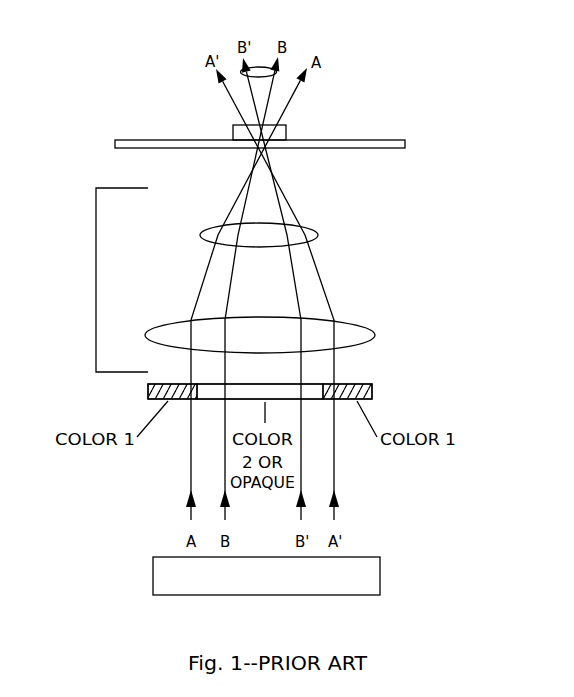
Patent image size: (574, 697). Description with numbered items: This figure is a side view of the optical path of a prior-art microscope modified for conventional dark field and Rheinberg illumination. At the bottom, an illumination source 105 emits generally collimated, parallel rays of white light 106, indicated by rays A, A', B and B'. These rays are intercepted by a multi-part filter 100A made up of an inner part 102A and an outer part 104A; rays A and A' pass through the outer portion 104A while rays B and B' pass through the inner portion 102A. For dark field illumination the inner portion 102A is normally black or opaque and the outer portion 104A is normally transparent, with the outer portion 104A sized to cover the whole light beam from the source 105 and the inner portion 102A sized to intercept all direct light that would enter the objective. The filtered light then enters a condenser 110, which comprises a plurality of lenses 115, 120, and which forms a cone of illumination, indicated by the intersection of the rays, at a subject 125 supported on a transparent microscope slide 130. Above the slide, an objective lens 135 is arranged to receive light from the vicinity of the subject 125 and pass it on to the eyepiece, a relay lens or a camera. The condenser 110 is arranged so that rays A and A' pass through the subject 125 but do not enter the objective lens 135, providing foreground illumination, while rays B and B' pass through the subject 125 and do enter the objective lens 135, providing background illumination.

The multi-part filter 100A is at (311, 378).
The inner part of filter 102A is at (282, 384).
The outer part of filter 104A is at (337, 384).
The illumination source 105 is at (382, 575).
The light rays 106 is at (301, 482).
The condenser 110 is at (96, 296).
The condenser lens 115 is at (350, 322).
The condenser lens 120 is at (318, 233).
The subject 125 is at (233, 133).
The microscope slide 130 is at (392, 138).
The objective lens 135 is at (260, 67).